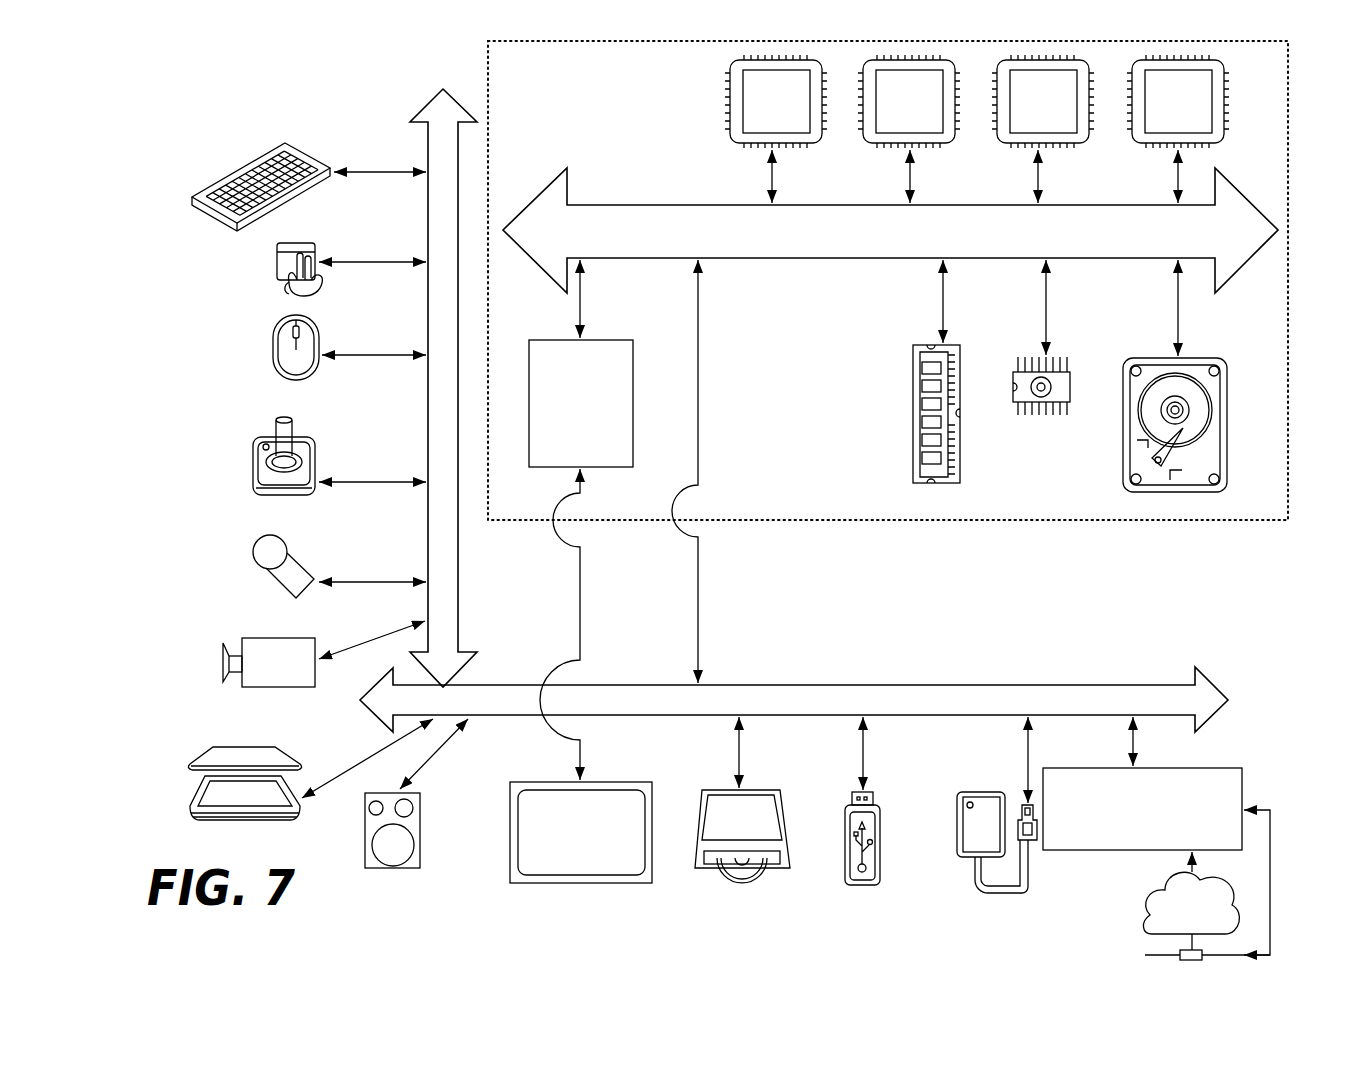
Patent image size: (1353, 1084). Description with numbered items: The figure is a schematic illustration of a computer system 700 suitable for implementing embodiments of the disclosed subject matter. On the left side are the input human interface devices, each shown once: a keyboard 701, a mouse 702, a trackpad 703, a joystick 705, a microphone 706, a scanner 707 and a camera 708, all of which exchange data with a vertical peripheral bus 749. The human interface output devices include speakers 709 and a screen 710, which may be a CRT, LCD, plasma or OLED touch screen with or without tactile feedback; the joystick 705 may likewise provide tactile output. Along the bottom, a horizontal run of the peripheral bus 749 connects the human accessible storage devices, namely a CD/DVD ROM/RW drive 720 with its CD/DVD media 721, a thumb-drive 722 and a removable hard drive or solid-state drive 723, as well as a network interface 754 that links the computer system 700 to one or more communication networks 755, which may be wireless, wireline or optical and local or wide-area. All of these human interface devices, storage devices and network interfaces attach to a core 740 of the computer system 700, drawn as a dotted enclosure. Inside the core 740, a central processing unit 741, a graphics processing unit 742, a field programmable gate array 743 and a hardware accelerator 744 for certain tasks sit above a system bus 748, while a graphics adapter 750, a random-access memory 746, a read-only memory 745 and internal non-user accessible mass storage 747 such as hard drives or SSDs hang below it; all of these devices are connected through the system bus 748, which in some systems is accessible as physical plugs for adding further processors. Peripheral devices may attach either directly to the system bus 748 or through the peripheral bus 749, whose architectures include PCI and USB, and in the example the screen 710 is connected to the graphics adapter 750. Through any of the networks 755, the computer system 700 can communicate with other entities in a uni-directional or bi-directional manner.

The computer system 700 is at (203, 113).
The keyboard 701 is at (190, 200).
The mouse 702 is at (272, 350).
The trackpad 703 is at (275, 264).
The joystick 705 is at (252, 482).
The microphone 706 is at (254, 552).
The scanner 707 is at (192, 808).
The camera 708 is at (223, 665).
The speakers 709 is at (390, 870).
The touch screen 710 is at (580, 885).
The CD/DVD ROM/RW 720 is at (788, 872).
The CD/DVD media 721 is at (722, 880).
The thumb-drive 722 is at (868, 888).
The removable hard drive or solid-state drive 723 is at (964, 858).
The core 740 is at (884, 522).
The central processing unit 741 is at (776, 129).
The graphics processing unit 742 is at (909, 129).
The field programmable gate array 743 is at (1043, 129).
The hardware accelerator 744 is at (1178, 129).
The read-only memory 745 is at (1033, 416).
The random-access memory 746 is at (912, 440).
The internal mass storage 747 is at (1135, 358).
The system bus 748 is at (890, 230).
The peripheral bus 749 is at (428, 133).
The graphics adapter 750 is at (581, 520).
The network interface 754 is at (1142, 783).
The communication network 755 is at (1147, 922).